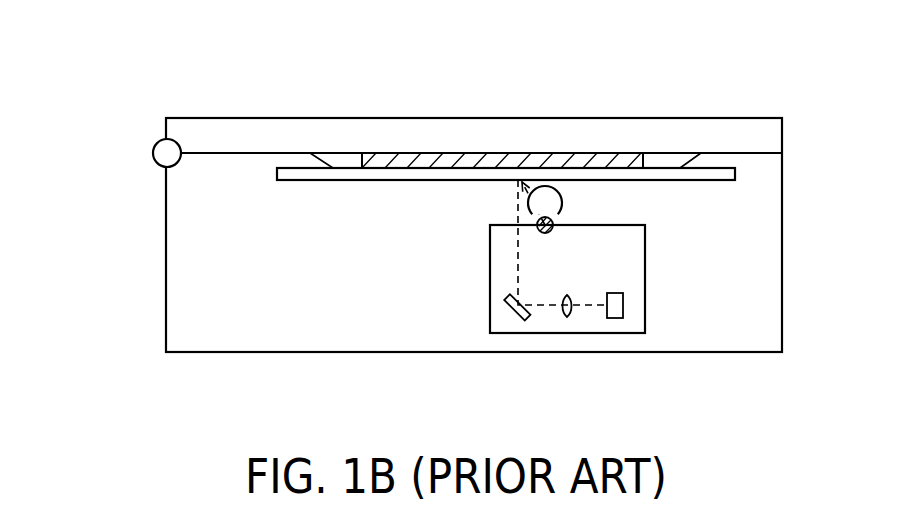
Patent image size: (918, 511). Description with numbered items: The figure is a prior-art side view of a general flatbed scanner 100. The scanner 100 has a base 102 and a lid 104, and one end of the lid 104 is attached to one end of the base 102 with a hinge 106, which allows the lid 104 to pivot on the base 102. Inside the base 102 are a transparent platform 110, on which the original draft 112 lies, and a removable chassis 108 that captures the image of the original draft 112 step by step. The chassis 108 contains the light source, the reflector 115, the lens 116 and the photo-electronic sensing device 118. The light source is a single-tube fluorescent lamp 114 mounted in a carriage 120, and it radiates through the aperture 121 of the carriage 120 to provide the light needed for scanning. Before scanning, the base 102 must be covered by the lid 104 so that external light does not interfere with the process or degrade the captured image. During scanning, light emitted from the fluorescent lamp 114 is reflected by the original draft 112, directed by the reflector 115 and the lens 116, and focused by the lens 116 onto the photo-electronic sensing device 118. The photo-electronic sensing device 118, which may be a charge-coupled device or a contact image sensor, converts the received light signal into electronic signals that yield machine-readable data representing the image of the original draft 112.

The scanner 100 is at (775, 42).
The base 102 is at (180, 233).
The lid 104 is at (187, 138).
The hinge 106 is at (163, 155).
The chassis 108 is at (490, 287).
The transparent platform 110 is at (310, 175).
The original draft 112 is at (400, 162).
The fluorescent lamp 114 is at (562, 212).
The reflector 115 is at (513, 322).
The lens 116 is at (573, 316).
The photo-electronic sensing device 118 is at (618, 306).
The carriage 120 is at (562, 229).
The aperture 121 is at (548, 200).